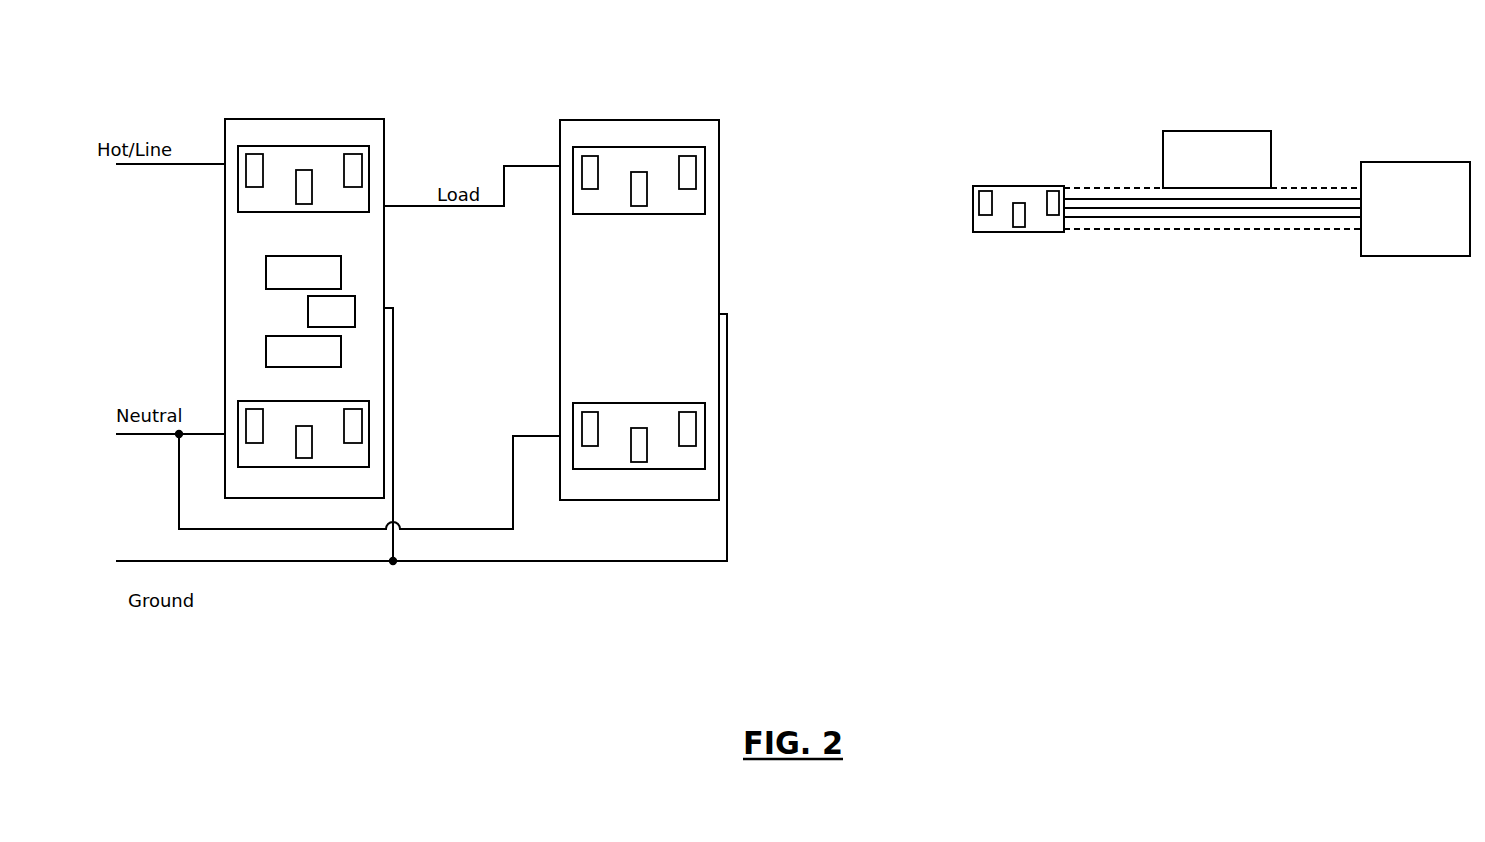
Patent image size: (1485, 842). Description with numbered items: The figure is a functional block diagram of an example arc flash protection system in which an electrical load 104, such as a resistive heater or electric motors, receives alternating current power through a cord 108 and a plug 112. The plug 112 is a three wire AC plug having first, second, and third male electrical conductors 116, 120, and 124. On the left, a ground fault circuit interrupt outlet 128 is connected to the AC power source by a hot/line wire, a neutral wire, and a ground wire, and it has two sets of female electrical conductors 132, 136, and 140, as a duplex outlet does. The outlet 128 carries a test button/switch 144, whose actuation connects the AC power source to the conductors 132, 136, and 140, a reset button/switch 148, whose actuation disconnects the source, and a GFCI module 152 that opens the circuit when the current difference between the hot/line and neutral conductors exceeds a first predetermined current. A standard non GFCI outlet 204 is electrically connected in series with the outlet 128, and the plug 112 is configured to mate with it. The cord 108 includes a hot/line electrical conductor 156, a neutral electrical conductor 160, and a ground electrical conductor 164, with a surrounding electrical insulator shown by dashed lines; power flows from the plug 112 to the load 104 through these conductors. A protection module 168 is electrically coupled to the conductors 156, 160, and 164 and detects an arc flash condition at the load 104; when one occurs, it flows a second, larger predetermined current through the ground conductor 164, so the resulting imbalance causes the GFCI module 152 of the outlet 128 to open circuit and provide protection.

The electrical load 104 is at (1393, 160).
The cord 108 is at (1205, 232).
The plug 112 is at (1011, 232).
The first electrical conductor 116 is at (1053, 186).
The second electrical conductor 120 is at (984, 186).
The third electrical conductor 124 is at (1018, 203).
The outlet 128 is at (257, 118).
The electrical conductor 132 is at (252, 156).
The electrical conductor 136 is at (303, 170).
The electrical conductor 140 is at (353, 156).
The test button/switch 144 is at (266, 258).
The reset button/switch 148 is at (266, 340).
The GFCI module 152 is at (355, 296).
The hot/line electrical conductor 156 is at (1125, 200).
The neutral electrical conductor 160 is at (1142, 209).
The ground electrical conductor 164 is at (1167, 219).
The protection module 168 is at (1202, 130).
The outlet 204 is at (592, 119).